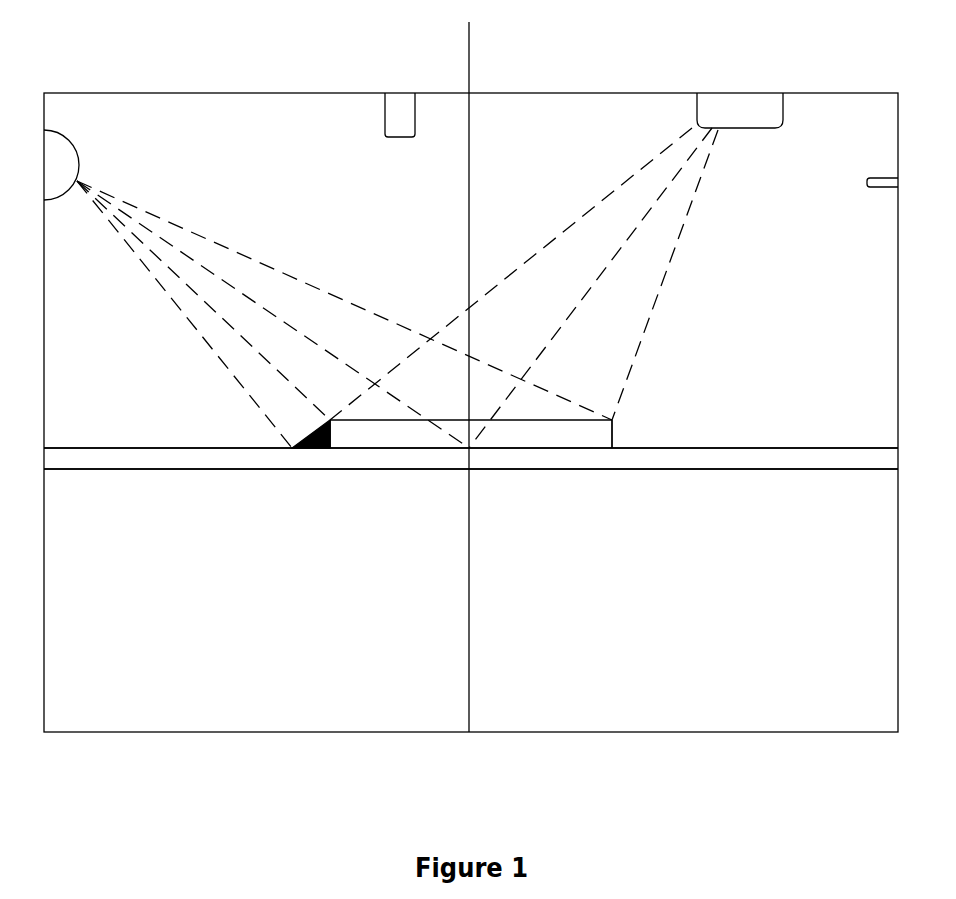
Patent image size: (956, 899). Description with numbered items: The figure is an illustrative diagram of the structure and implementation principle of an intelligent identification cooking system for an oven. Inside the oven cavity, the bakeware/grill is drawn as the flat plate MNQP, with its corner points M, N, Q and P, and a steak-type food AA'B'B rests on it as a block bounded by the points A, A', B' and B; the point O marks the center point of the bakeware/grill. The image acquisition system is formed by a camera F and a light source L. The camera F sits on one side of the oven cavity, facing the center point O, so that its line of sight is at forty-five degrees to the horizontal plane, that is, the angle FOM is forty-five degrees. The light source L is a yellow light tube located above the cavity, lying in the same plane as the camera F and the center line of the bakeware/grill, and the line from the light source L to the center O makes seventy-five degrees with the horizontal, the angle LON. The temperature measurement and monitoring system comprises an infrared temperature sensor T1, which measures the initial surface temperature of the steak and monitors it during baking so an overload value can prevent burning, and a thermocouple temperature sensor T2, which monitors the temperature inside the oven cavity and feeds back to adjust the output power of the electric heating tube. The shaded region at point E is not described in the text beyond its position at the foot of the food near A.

The camera F is at (44, 165).
The infrared temperature sensor T1 is at (400, 100).
The light source L is at (740, 96).
The thermocouple temperature sensor T2 is at (896, 182).
The bakeware/grill corner point M is at (458, 437).
The bakeware/grill corner point N is at (481, 437).
The bakeware/grill corner point P is at (458, 483).
The bakeware/grill corner point Q is at (481, 483).
The shadow edge point E is at (302, 444).
The steak-type food corner point A is at (327, 444).
The steak-type food corner point A' is at (469, 424).
The center point of the bakeware/grill O is at (478, 377).
The steak-type food corner point B is at (622, 444).
The steak-type food corner point B' is at (624, 431).